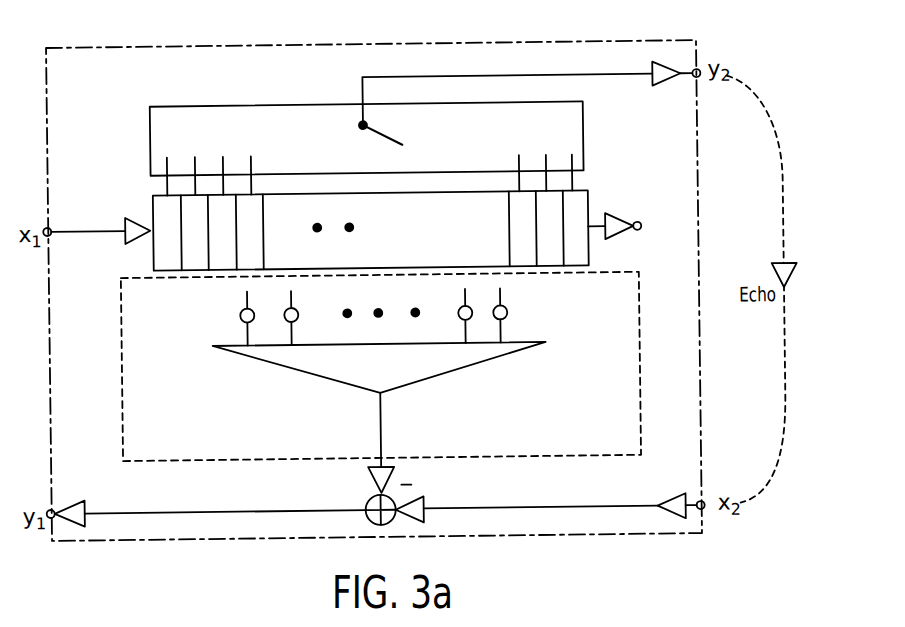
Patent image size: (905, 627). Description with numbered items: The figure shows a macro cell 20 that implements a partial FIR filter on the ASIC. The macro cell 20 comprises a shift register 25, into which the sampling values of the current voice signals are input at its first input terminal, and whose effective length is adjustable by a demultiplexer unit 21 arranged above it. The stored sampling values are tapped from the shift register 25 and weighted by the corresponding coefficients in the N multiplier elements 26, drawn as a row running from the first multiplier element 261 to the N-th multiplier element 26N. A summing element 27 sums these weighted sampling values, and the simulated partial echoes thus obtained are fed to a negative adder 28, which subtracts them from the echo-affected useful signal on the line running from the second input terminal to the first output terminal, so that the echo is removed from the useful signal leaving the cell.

The macro cell 20 is at (200, 45).
The demultiplexer unit 21 is at (160, 128).
The shift register 25 is at (438, 236).
The multiplier elements 26 is at (378, 316).
The first multiplier element 261 is at (240, 314).
The N-th multiplier element 26N is at (509, 313).
The summing element 27 is at (293, 373).
The negative adder 28 is at (367, 517).